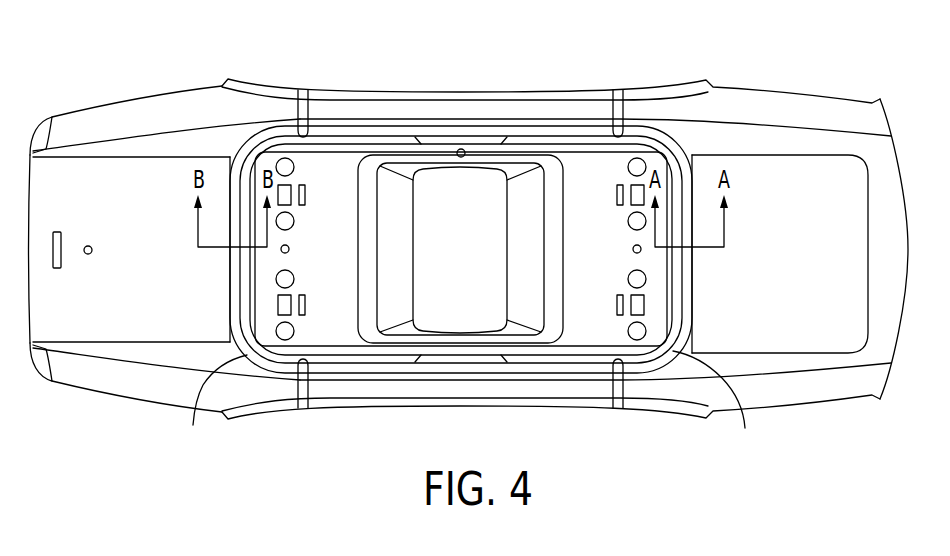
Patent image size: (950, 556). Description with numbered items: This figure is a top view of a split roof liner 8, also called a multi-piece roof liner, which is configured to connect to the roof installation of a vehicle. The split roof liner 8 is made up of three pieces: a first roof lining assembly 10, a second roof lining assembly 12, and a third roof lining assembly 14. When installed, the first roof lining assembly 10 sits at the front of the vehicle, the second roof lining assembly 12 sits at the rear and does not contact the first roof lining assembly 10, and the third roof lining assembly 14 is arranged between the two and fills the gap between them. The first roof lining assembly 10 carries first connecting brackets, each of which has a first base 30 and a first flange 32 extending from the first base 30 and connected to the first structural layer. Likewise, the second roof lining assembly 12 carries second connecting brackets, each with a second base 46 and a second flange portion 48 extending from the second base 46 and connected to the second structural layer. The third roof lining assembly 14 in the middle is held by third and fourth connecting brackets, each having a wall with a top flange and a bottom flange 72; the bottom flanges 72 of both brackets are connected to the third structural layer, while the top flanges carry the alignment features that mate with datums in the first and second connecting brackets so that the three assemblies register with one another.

The split roof liner 8 is at (672, 466).
The first roof lining assembly 10 is at (795, 103).
The second roof lining assembly 12 is at (157, 103).
The third roof lining assembly 14 is at (447, 110).
The first base 30 is at (675, 317).
The first flange 32 is at (714, 407).
The second base 46 is at (248, 288).
The second flange portion 48 is at (213, 408).
The bottom flange 72 is at (252, 288).